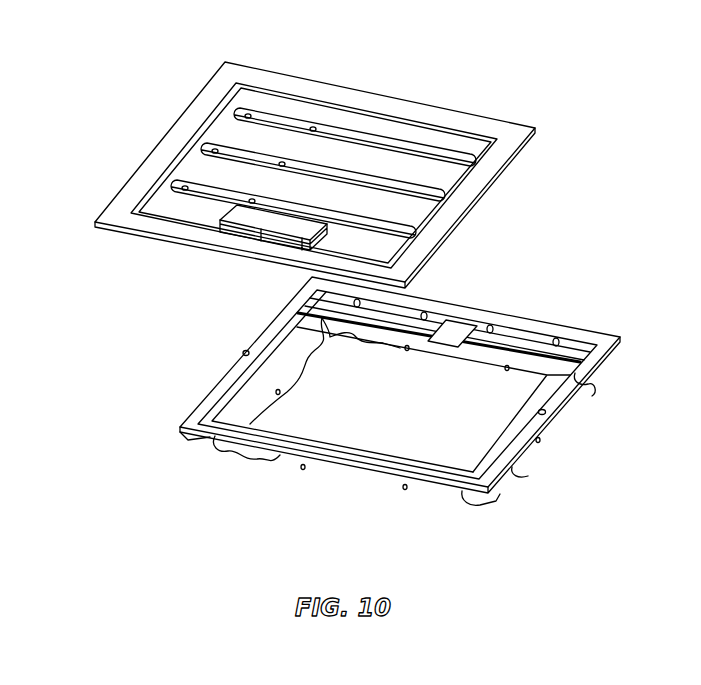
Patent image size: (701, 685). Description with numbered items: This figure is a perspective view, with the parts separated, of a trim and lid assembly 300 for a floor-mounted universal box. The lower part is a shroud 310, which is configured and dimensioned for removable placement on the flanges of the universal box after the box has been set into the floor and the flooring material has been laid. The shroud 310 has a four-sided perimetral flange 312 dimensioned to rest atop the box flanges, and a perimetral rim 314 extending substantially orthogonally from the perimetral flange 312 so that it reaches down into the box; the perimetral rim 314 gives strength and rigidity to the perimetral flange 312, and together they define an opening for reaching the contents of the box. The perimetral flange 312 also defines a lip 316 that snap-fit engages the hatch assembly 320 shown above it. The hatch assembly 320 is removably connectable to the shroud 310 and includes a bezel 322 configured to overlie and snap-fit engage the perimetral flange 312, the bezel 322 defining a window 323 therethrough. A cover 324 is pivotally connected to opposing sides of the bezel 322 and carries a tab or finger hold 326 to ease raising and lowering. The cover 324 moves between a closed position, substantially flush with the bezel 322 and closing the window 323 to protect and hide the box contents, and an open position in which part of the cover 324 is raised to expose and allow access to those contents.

The trim and lid assembly 300 is at (130, 102).
The shroud 310 is at (481, 300).
The perimetral flange 312 is at (243, 350).
The perimetral rim 314 is at (283, 461).
The lip 316 is at (205, 442).
The hatch assembly 320 is at (362, 86).
The bezel 322 is at (230, 266).
The window 323 is at (472, 393).
The cover 324 is at (418, 176).
The finger hold 326 is at (212, 220).